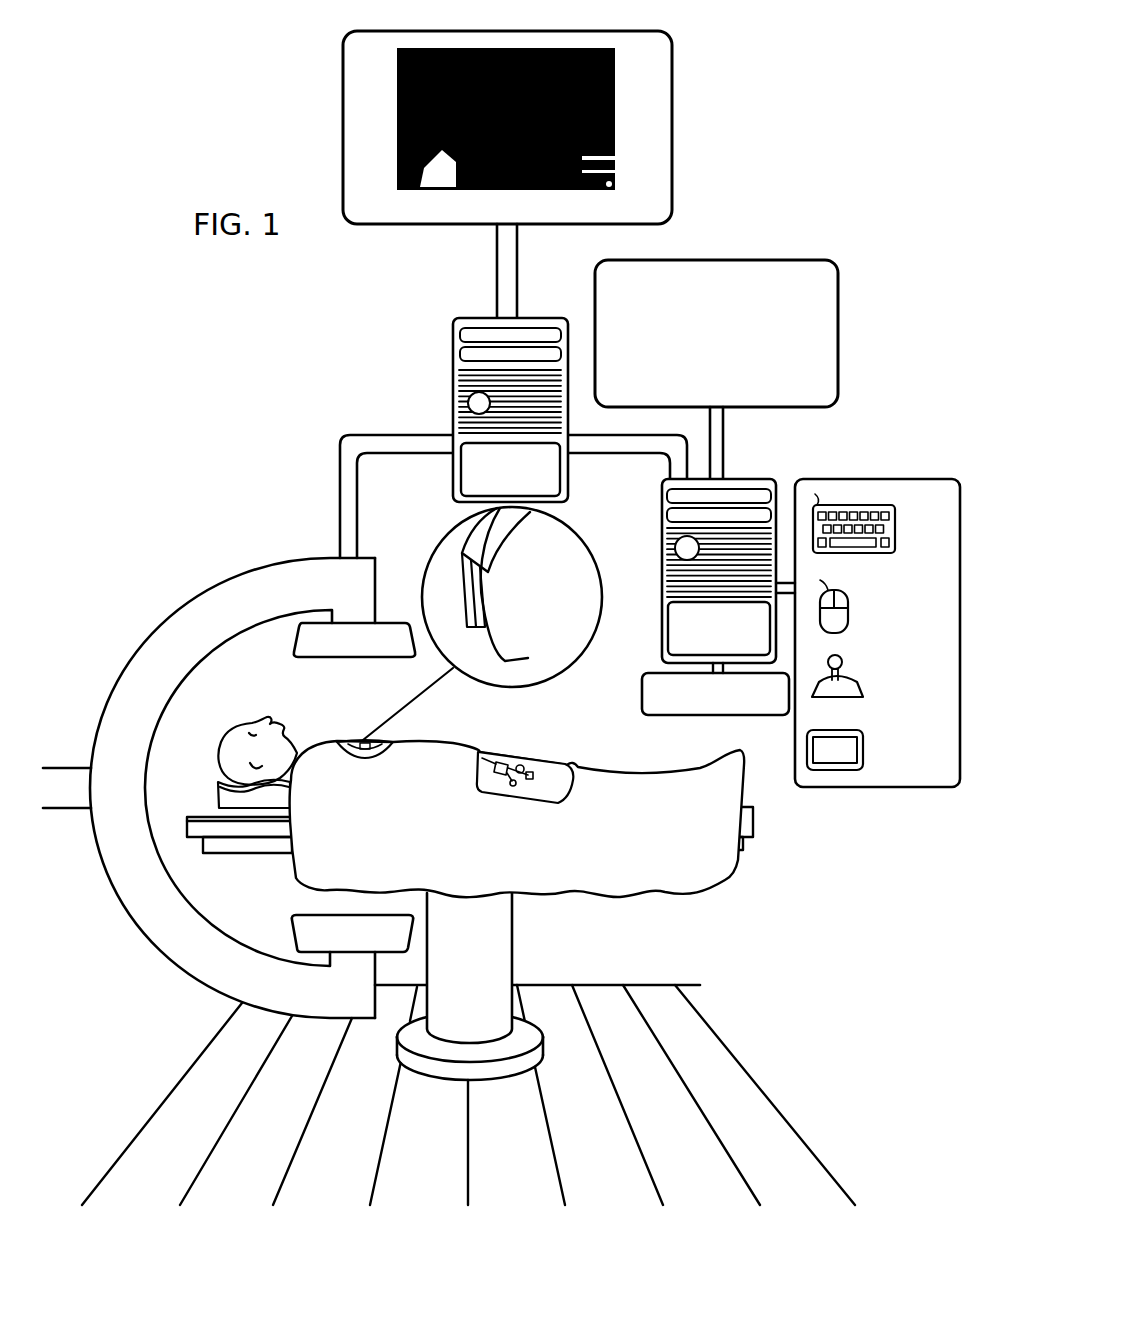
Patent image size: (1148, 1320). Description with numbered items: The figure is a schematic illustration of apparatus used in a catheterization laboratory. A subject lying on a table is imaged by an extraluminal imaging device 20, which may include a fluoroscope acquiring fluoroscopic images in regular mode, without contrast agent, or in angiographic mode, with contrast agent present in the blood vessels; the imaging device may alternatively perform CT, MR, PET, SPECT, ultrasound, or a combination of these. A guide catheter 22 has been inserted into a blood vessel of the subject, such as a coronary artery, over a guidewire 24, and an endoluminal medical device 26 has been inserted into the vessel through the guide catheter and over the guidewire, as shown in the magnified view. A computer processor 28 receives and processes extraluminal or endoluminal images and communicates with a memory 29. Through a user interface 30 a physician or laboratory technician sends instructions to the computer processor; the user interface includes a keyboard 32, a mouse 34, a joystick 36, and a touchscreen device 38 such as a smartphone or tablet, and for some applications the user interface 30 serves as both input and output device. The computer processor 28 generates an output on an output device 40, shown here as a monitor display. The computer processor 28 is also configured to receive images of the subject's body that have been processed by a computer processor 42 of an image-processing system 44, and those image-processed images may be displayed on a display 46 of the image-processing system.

The extraluminal imaging device 20 is at (307, 643).
The guide catheter 22 is at (520, 523).
The guidewire 24 is at (503, 654).
The endoluminal medical device 26 is at (482, 587).
The computer processor 28 is at (662, 487).
The memory 29 is at (642, 693).
The user interface 30 is at (871, 479).
The keyboard 32 is at (897, 529).
The mouse 34 is at (849, 619).
The joystick 36 is at (858, 683).
The touchscreen device 38 is at (864, 752).
The output device 40 is at (840, 325).
The computer processor of the image-processing system 42 is at (452, 372).
The image-processing system 44 is at (485, 415).
The display of the image-processing system 46 is at (674, 138).